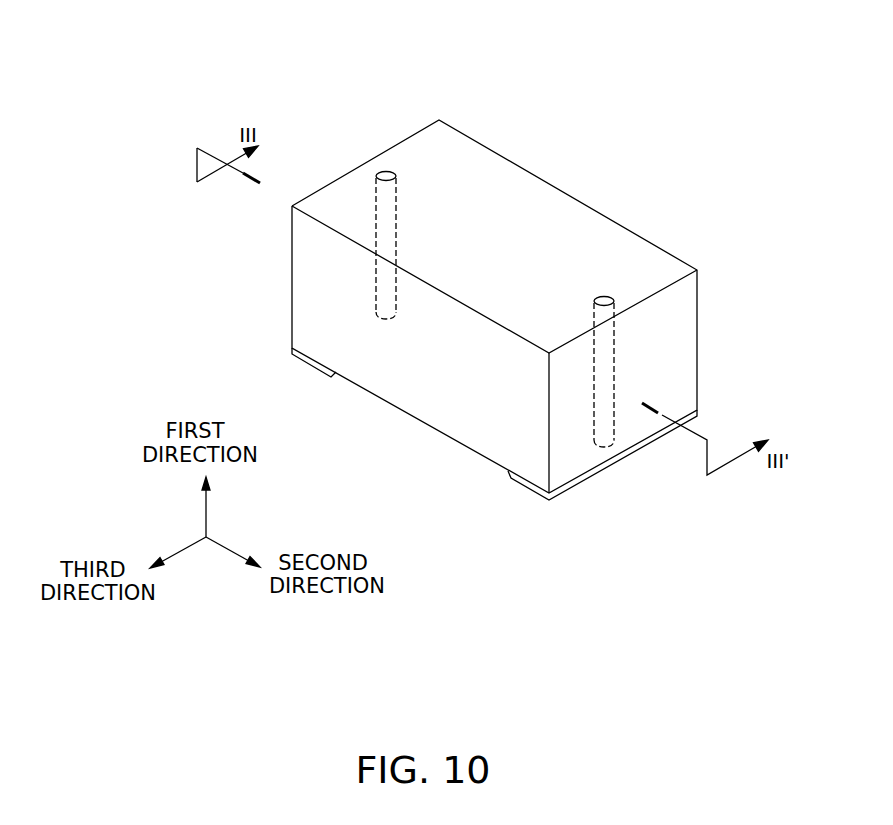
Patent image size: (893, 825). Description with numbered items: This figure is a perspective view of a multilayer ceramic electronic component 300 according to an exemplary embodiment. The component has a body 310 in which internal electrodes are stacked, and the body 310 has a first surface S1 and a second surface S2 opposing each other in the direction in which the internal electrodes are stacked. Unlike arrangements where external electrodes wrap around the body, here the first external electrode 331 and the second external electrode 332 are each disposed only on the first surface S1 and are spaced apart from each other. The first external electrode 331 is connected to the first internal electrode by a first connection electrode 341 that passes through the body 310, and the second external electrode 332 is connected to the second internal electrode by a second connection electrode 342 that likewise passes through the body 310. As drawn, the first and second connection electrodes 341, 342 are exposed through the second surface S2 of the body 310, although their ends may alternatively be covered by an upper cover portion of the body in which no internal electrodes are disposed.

The multilayer ceramic electronic component 300 is at (243, 36).
The body 310 is at (497, 177).
The first external electrode 331 is at (314, 364).
The second external electrode 332 is at (529, 487).
The first connection electrode 341 is at (386, 172).
The second connection electrode 342 is at (605, 295).
The first surface S1 is at (443, 455).
The second surface S2 is at (572, 236).